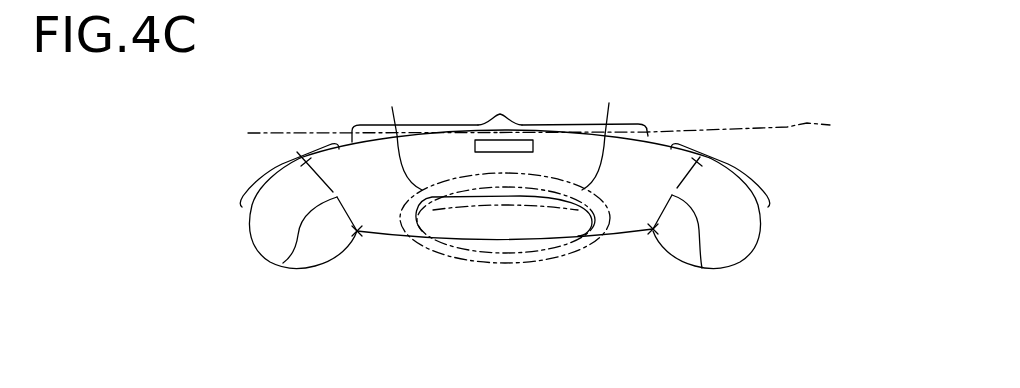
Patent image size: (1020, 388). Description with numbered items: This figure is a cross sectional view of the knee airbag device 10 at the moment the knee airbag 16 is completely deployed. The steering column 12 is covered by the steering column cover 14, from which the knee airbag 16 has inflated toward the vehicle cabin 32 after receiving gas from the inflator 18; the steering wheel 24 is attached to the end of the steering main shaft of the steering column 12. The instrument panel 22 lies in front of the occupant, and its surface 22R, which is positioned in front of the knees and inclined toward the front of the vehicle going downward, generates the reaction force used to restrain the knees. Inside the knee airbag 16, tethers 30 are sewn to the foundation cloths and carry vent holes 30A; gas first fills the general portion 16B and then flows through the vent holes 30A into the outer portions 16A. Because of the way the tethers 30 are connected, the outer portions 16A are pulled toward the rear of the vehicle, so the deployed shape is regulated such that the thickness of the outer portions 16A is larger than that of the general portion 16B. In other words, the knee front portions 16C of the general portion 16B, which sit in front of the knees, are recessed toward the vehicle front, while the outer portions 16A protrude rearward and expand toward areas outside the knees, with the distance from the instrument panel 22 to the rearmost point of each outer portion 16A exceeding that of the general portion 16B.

The knee airbag device 10 is at (297, 112).
The steering column 12 is at (378, 117).
The steering column cover 14 is at (613, 116).
The knee airbag 16 is at (772, 242).
The outer portions 16A is at (283, 163).
The general portion 16B is at (501, 106).
The knee front portions 16C is at (360, 234).
The inflator 18 is at (533, 148).
The instrument panel 22 is at (248, 133).
The surface of the instrument panel 22R is at (694, 130).
The steering wheel 24 is at (557, 255).
The tether 30 is at (318, 178).
The vent holes 30A is at (283, 263).
The vehicle cabin 32 is at (512, 328).